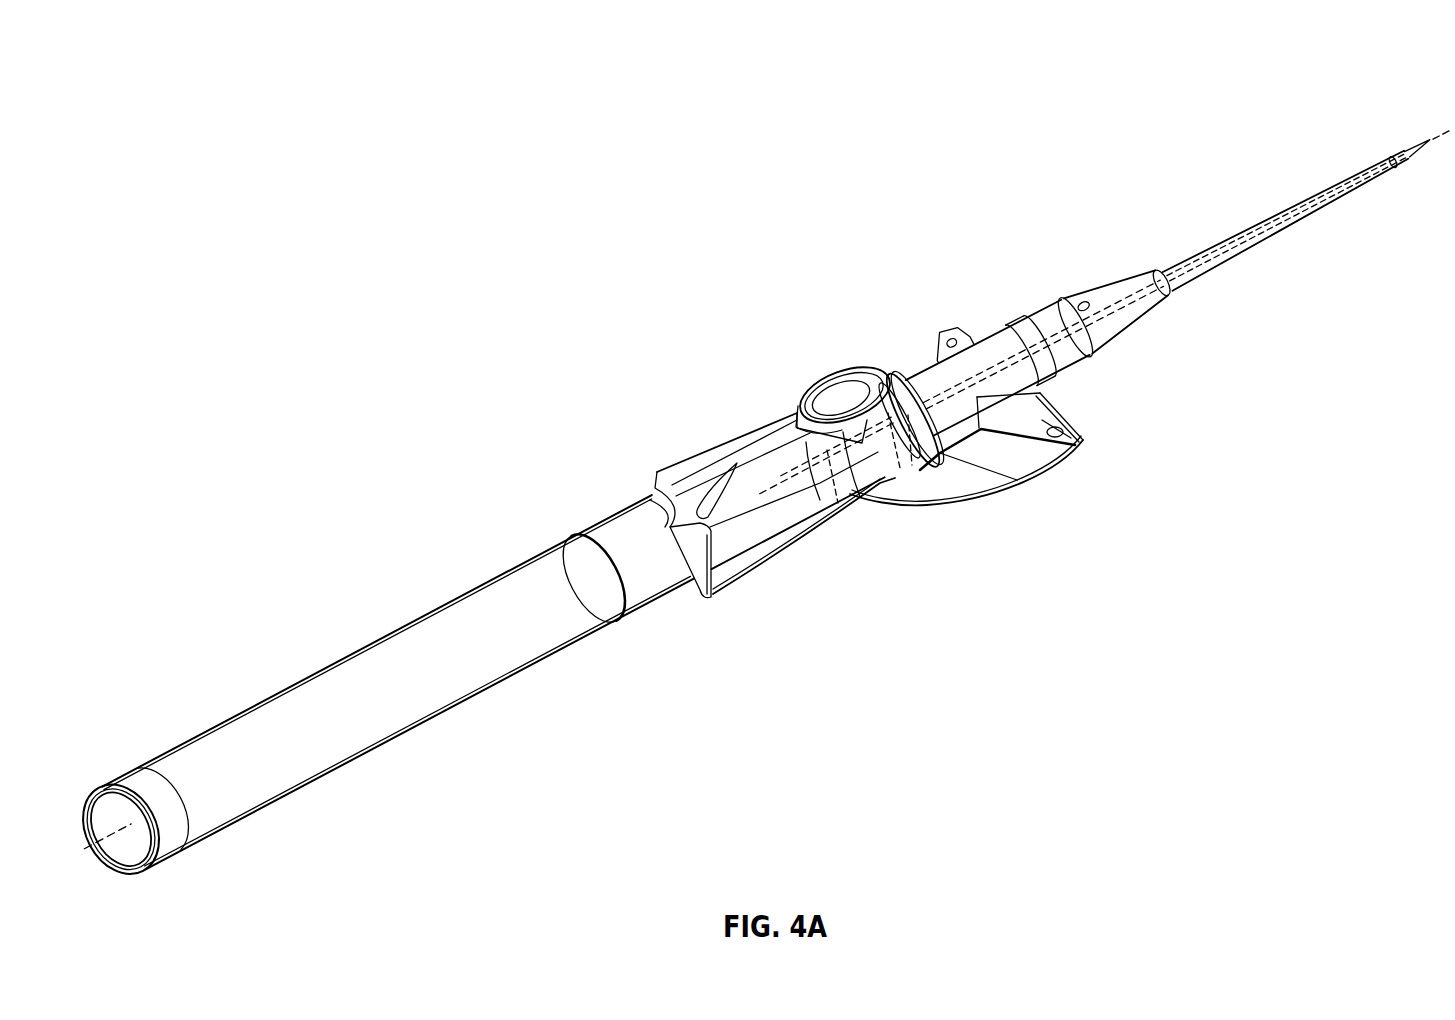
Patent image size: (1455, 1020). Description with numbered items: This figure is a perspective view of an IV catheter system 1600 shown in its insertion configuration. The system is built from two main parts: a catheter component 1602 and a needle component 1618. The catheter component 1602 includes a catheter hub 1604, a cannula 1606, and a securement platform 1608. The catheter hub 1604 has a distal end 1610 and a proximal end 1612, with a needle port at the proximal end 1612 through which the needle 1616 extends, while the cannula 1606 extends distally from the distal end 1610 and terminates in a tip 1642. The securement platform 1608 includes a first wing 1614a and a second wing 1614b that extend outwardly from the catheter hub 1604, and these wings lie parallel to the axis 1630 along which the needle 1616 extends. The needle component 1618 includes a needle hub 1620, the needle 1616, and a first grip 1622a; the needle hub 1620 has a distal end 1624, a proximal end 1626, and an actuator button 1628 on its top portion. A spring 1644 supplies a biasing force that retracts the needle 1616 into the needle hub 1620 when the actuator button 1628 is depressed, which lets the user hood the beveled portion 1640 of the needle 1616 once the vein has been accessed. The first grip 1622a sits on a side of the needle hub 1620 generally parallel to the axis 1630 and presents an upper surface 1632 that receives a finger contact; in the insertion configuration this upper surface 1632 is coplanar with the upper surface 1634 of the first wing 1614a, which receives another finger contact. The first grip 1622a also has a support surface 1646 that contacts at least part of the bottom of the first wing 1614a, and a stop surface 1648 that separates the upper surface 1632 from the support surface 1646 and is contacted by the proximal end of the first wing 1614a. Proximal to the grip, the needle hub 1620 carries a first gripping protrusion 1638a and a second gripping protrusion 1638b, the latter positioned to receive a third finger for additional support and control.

The IV catheter system 1600 is at (330, 304).
The catheter component 1602 is at (1052, 272).
The catheter hub 1604 is at (1037, 330).
The cannula 1606 is at (1290, 206).
The securement platform 1608 is at (1117, 351).
The distal end of the catheter hub 1610 is at (1157, 274).
The proximal end of the catheter hub 1612 is at (900, 376).
The first wing 1614a is at (1067, 448).
The second wing 1614b is at (950, 332).
The needle 1616 is at (915, 380).
The needle component 1618 is at (345, 599).
The needle hub 1620 is at (738, 438).
The first grip 1622a is at (940, 492).
The distal end of the needle hub 1624 is at (913, 470).
The proximal end of the needle hub 1626 is at (124, 790).
The actuator button 1628 is at (828, 402).
The axis 1630 is at (1447, 130).
The upper surface of the first grip 1632 is at (1008, 463).
The upper surface of the first wing 1634 is at (1052, 377).
The first gripping protrusion 1638a is at (722, 578).
The second gripping protrusion 1638b is at (672, 478).
The beveled portion 1640 is at (1418, 143).
The tip of the cannula 1642 is at (1393, 167).
The spring 1644 is at (505, 607).
The support surface 1646 is at (1080, 436).
The stop surface 1648 is at (1023, 412).